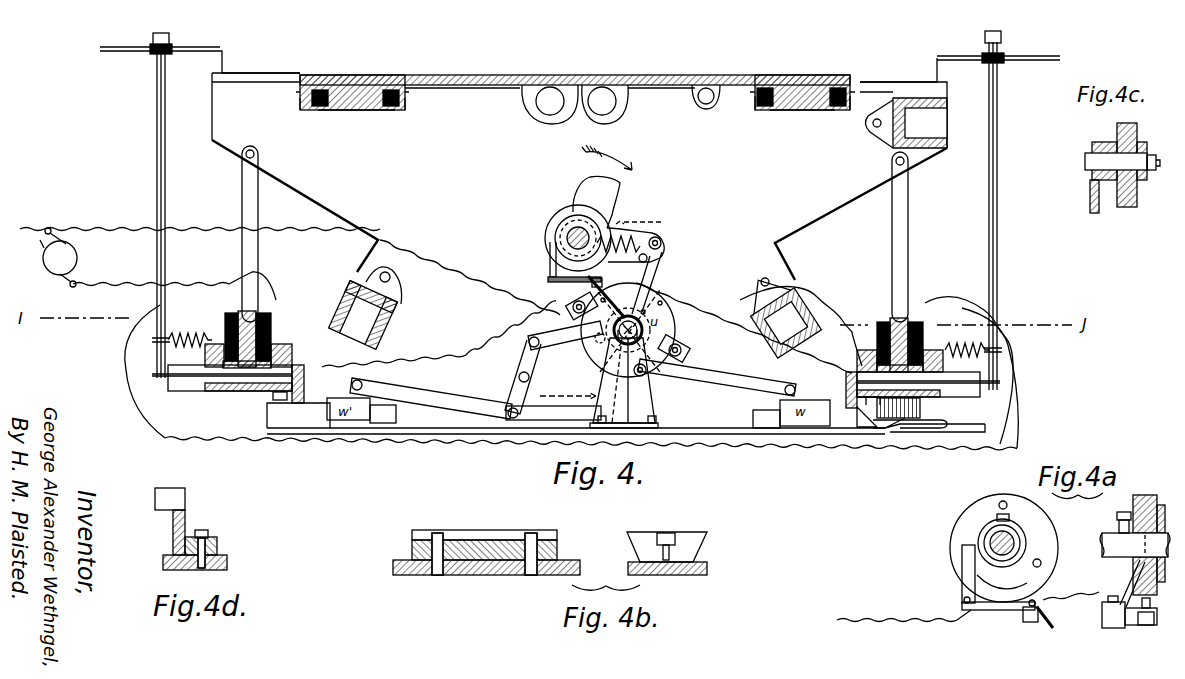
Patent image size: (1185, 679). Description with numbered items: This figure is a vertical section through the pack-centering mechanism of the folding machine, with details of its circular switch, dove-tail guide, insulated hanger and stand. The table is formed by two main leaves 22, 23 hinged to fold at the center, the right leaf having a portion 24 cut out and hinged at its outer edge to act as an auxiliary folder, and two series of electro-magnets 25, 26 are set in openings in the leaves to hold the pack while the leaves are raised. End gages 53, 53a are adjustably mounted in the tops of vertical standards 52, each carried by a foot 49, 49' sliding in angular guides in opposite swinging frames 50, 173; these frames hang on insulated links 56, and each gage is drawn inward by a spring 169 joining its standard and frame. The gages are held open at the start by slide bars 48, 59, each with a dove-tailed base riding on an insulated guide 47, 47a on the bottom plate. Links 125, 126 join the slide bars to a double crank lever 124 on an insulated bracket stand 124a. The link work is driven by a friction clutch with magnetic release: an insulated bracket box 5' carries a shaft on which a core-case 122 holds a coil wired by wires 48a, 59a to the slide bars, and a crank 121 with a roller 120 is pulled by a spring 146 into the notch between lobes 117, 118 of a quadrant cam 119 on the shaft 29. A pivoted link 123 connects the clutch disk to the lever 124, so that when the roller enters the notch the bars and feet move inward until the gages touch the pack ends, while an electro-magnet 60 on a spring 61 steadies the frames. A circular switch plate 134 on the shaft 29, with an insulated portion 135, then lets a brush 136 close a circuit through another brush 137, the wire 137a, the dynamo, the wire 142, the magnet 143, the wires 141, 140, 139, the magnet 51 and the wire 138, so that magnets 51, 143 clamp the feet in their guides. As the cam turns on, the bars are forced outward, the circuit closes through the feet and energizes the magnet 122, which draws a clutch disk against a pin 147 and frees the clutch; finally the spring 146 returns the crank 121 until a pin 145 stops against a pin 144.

In FIG. 4, the main leaf 22 is at (490, 75).
In FIG. 4, the main leaf 23 is at (742, 82).
In FIG. 4, the auxiliary folder portion 24 is at (655, 75).
In FIG. 4, the series of electro-magnets 25 is at (368, 75).
In FIG. 4, the series of electro-magnets 26 is at (818, 82).
In FIG. 4, the shaft 29 is at (555, 222).
In FIG. 4, the dove-tail guide 47 is at (753, 416).
In FIG. 4B, the dove-tail guide 47 is at (412, 545).
In FIG. 4, the dove-tail guide 47a is at (396, 418).
In FIG. 4, the slide bar 48 is at (848, 394).
In FIG. 4, the wire 48a is at (752, 332).
In FIG. 4, the foot 49 is at (948, 384).
In FIG. 4, the foot 49' is at (195, 378).
In FIG. 4, the swinging frame 50 is at (868, 353).
In FIG. 4, the magnet 51 is at (930, 322).
In FIG. 4, the vertical standard 52 is at (157, 138).
In FIG. 4, the end gage 53 is at (954, 62).
In FIG. 4, the end gage 53a is at (232, 42).
In FIG. 4, the link 56 is at (258, 208).
In FIG. 4C, the link 56 is at (1090, 199).
In FIG. 4, the slide bar 59 is at (306, 388).
In FIG. 4, the wire 59a is at (470, 356).
In FIG. 4, the electro-magnet 60 is at (924, 412).
In FIG. 4, the spring 61 is at (890, 430).
In FIG. 4, the lobe 117 is at (632, 236).
In FIG. 4, the lobe 118 is at (620, 183).
In FIG. 4, the quadrant cam 119 is at (563, 202).
In FIG. 4, the roller 120 is at (662, 243).
In FIG. 4, the crank 121 is at (670, 256).
In FIG. 4, the core-case 122 is at (675, 330).
In FIG. 4, the link 123 is at (553, 414).
In FIG. 4, the double crank lever 124 is at (527, 362).
In FIG. 4, the bracket stand 124a is at (540, 397).
In FIG. 4D, the bracket stand 124a is at (186, 512).
In FIG. 4, the link 125 is at (717, 377).
In FIG. 4, the link 126 is at (431, 398).
In FIG. 4, the circular switch plate 134 is at (547, 236).
In FIG. 4A, the circular switch plate 134 is at (958, 524).
In FIG. 4, the insulated portion 135 is at (550, 255).
In FIG. 4A, the insulated portion 135 is at (1022, 586).
In FIG. 4, the brush 136 is at (588, 282).
In FIG. 4A, the brush 136 is at (1025, 598).
In FIG. 4, the brush 137 is at (548, 268).
In FIG. 4A, the brush 137 is at (962, 580).
In FIG. 4, the wire 137a is at (232, 232).
In FIG. 4A, the wire 137a is at (906, 620).
In FIG. 4, the wire 138 is at (846, 292).
In FIG. 4A, the wire 138 is at (1061, 617).
In FIG. 4, the wire 139 is at (972, 306).
In FIG. 4, the wire 140 is at (228, 438).
In FIG. 4, the wire 141 is at (216, 301).
In FIG. 4, the wire 142 is at (232, 274).
In FIG. 4, the magnet 143 is at (276, 320).
In FIG. 4, the pin 144 is at (593, 332).
In FIG. 4, the pin 145 is at (598, 316).
In FIG. 4, the spring 146 is at (664, 234).
In FIG. 4, the pin 147 is at (646, 376).
In FIG. 4, the spring 169 is at (180, 328).
In FIG. 4, the swinging frame 173 is at (290, 356).
In FIG. 4, the bracket box 5' is at (631, 379).